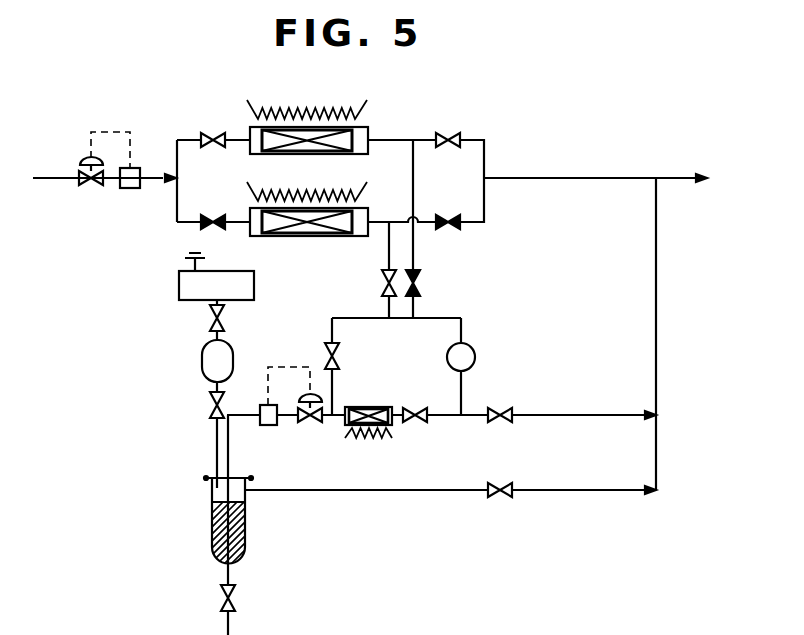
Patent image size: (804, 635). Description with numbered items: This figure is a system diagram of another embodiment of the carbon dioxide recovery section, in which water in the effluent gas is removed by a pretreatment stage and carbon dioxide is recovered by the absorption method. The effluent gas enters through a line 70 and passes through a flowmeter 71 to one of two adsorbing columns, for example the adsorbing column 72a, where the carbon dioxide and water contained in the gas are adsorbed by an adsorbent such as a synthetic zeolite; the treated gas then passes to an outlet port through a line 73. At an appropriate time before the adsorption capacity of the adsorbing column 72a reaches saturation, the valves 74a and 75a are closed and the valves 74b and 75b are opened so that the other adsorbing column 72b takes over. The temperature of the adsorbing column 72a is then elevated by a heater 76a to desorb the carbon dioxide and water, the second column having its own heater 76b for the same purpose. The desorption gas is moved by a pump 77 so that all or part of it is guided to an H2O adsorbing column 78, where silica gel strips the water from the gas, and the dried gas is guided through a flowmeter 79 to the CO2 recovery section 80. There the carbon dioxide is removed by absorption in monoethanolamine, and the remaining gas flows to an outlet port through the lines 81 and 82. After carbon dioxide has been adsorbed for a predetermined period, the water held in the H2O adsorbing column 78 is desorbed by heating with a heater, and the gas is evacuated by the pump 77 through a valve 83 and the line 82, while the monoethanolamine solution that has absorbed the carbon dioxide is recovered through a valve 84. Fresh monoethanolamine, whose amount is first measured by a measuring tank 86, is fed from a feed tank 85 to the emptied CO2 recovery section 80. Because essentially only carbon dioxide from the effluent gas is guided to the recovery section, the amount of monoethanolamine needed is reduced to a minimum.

The line 70 is at (50, 179).
The flowmeter 71 is at (130, 189).
The adsorbing column 72a is at (363, 129).
The adsorbing column 72b is at (300, 238).
The line 73 is at (538, 178).
The valve 74a is at (214, 133).
The valve 74b is at (214, 215).
The valve 75a is at (448, 133).
The valve 75b is at (448, 215).
The heater 76a is at (272, 106).
The heater 76b is at (272, 192).
The pump 77 is at (475, 357).
The H2O adsorbing column 78 is at (372, 398).
The flowmeter 79 is at (268, 425).
The CO2 recovery section 80 is at (209, 542).
The line 81 is at (398, 490).
The line 82 is at (656, 361).
The valve 83 is at (326, 353).
The valve 84 is at (234, 598).
The feed tank 85 is at (179, 285).
The measuring tank 86 is at (202, 357).